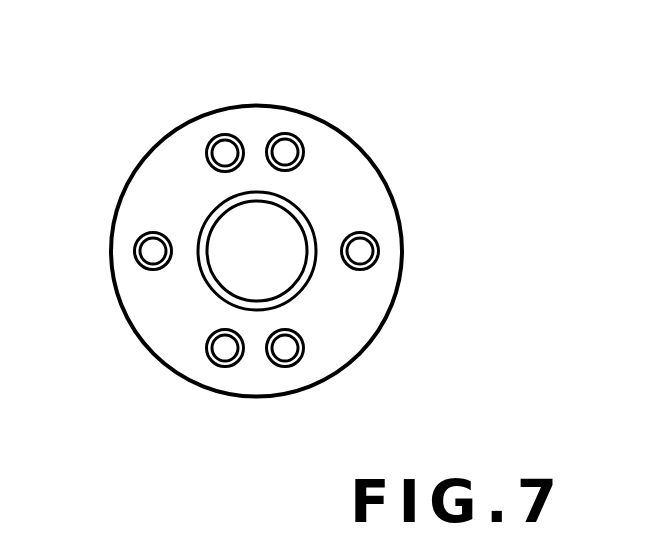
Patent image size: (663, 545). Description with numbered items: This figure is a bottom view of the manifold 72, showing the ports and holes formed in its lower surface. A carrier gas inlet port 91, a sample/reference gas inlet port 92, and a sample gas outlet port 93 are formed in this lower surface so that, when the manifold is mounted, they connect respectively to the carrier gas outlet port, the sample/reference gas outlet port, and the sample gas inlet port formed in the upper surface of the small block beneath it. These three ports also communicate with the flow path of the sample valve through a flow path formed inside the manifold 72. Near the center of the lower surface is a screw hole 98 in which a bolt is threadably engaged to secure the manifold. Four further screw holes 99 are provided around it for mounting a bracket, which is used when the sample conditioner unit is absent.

The manifold 72 is at (383, 180).
The carrier gas inlet port 91 is at (136, 259).
The sample/reference gas inlet port 92 is at (287, 135).
The sample gas outlet port 93 is at (288, 365).
The screw hole 98 is at (298, 295).
The screw holes 99 is at (220, 135).